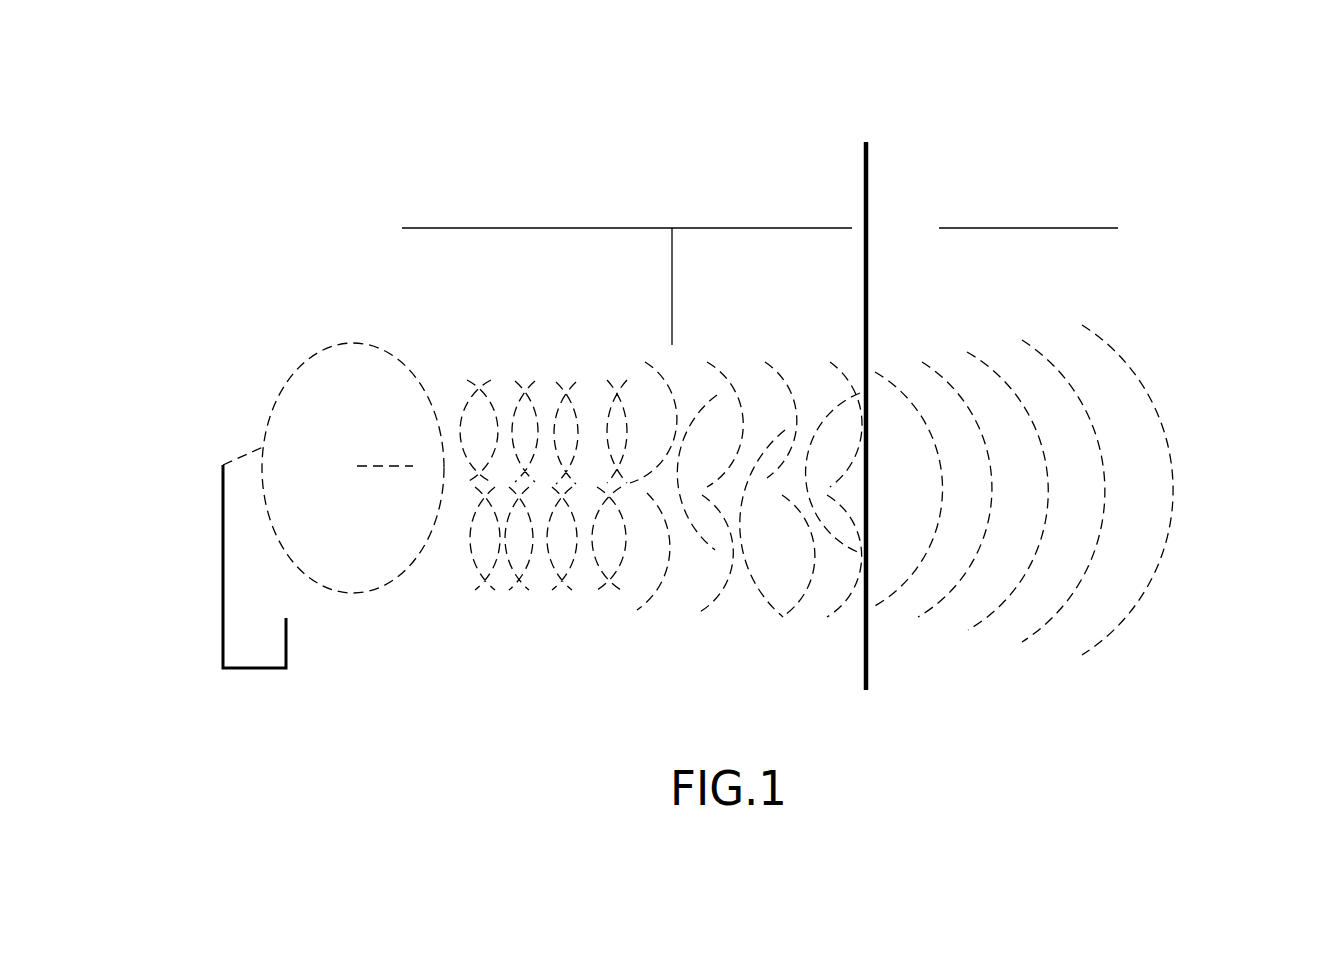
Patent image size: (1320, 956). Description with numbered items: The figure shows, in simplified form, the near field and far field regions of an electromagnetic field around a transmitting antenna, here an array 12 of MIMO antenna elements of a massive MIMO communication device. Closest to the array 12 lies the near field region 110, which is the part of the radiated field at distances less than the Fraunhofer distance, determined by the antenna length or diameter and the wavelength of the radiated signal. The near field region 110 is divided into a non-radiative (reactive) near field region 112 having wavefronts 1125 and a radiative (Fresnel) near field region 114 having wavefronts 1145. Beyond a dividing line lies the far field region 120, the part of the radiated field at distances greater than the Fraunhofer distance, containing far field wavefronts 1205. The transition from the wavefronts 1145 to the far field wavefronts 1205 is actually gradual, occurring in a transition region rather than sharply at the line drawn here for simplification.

The array of MIMO antenna elements 12 is at (289, 334).
The near field region 110 is at (619, 172).
The non-radiative (reactive) near field region 112 is at (465, 205).
The radiative (Fresnel) near field region 114 is at (761, 200).
The far field region 120 is at (969, 172).
The wavefronts 1125 is at (471, 552).
The wavefronts 1145 is at (719, 601).
The far field wavefronts 1205 is at (1170, 467).